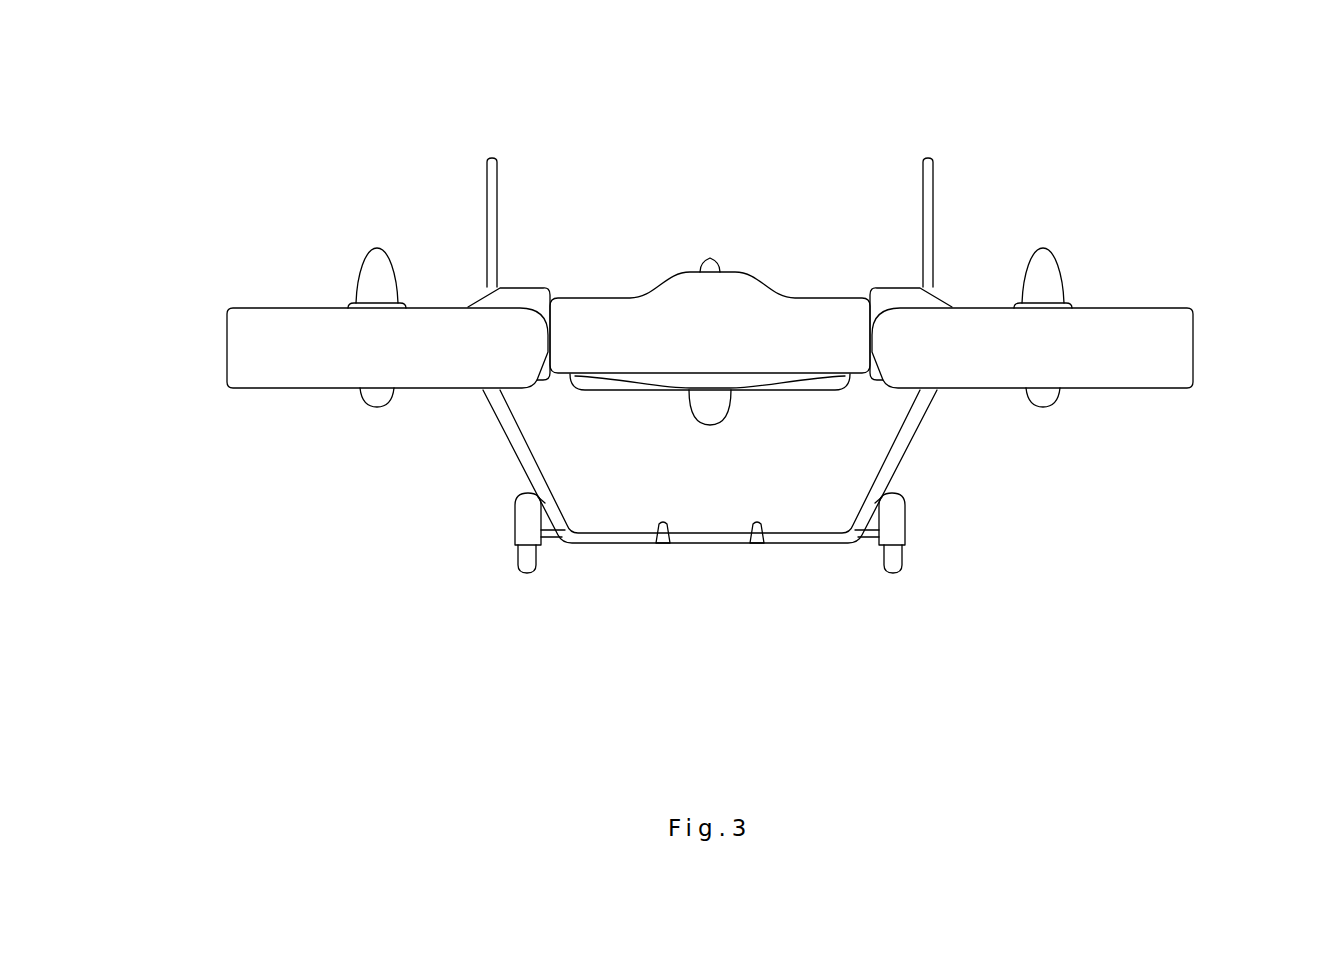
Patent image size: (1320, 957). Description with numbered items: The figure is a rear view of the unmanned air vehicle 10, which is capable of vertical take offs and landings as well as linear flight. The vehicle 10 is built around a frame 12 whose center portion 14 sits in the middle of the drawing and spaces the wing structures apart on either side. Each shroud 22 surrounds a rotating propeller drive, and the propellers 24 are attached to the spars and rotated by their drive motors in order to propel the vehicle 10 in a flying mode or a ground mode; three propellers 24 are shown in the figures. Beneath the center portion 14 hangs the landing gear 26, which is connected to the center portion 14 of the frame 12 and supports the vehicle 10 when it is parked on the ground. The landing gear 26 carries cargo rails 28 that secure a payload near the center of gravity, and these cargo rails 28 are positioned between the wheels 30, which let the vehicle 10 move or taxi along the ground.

The unmanned air vehicle 10 is at (286, 135).
The frame 12 is at (500, 186).
The center portion 14 is at (553, 284).
The shroud 22 is at (240, 316).
The propellers 24 is at (777, 202).
The landing gear 26 is at (961, 535).
The cargo rails 28 is at (660, 522).
The wheels 30 is at (536, 576).